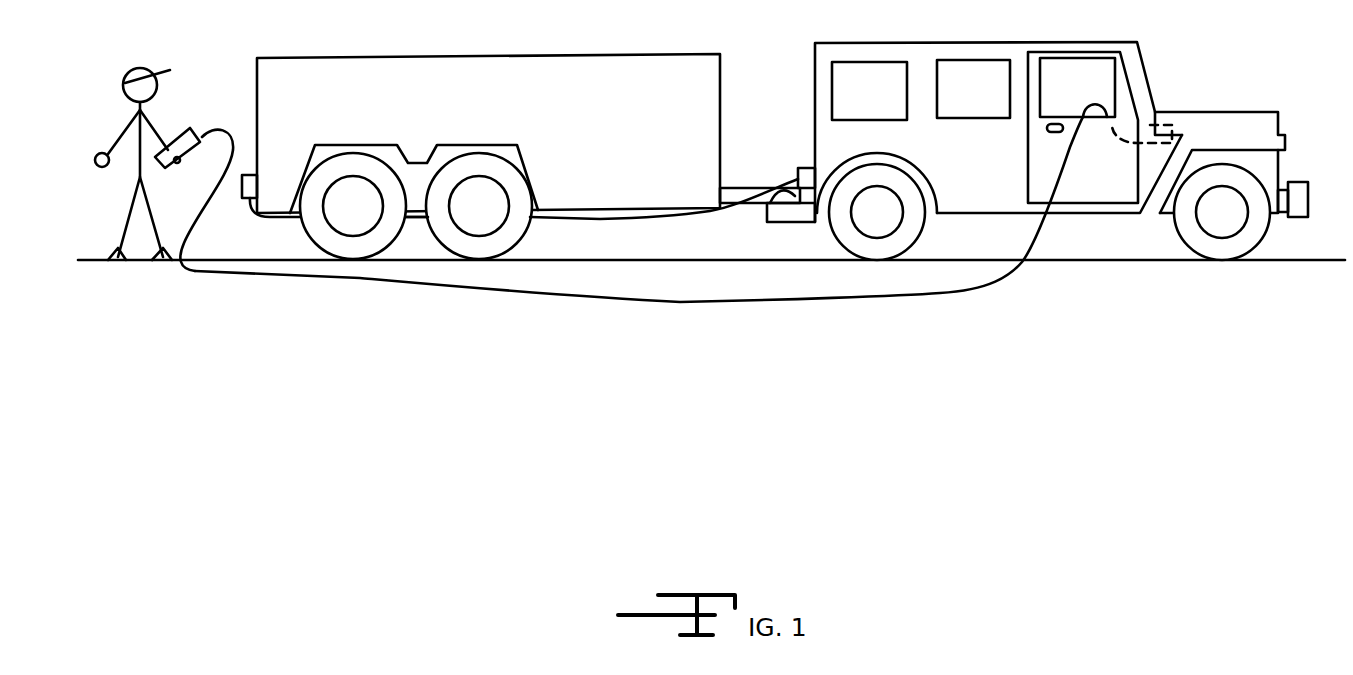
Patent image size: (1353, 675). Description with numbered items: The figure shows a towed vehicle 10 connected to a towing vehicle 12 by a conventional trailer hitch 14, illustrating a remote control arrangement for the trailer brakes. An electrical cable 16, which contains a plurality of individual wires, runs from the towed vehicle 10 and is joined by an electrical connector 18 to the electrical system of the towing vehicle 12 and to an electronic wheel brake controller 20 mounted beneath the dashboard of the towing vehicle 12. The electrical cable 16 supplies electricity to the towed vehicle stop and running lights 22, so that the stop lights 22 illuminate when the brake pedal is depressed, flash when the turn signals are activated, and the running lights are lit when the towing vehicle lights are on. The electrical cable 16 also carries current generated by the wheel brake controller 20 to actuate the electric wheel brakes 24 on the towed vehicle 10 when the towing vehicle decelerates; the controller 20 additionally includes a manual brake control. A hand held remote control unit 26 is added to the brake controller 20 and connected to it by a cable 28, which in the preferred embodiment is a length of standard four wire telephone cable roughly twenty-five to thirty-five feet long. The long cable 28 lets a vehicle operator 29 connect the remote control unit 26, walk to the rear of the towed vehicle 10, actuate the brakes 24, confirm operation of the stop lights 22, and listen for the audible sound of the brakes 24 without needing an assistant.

The towed vehicle 10 is at (677, 109).
The towing vehicle 12 is at (992, 167).
The trailer hitch 14 is at (748, 213).
The electrical cable 16 is at (256, 206).
The electrical connector 18 is at (810, 166).
The electronic wheel brake controller 20 is at (1172, 122).
The towed vehicle stop and running lights 22 is at (243, 201).
The electric wheel brakes 24 is at (368, 139).
The hand held remote control unit 26 is at (178, 130).
The cable 28 is at (938, 296).
The vehicle operator 29 is at (121, 109).